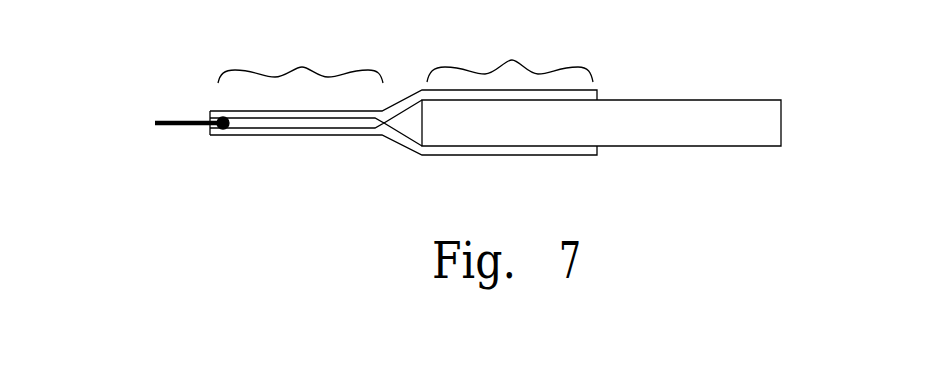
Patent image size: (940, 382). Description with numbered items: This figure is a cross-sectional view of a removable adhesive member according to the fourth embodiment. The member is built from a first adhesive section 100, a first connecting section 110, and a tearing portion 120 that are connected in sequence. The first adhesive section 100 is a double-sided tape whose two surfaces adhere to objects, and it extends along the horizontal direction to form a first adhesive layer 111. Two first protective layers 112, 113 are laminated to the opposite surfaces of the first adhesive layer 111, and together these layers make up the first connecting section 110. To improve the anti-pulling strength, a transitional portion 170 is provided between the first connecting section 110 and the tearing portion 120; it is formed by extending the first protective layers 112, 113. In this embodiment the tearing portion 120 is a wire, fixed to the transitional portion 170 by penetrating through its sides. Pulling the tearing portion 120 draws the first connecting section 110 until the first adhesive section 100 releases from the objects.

The first adhesive section 100 is at (516, 110).
The first connecting section 110 is at (510, 55).
The first adhesive layer 111 is at (548, 127).
The first protective layer 112 is at (587, 98).
The first protective layer 113 is at (510, 157).
The tearing portion 120 is at (175, 125).
The transitional portion 170 is at (296, 82).